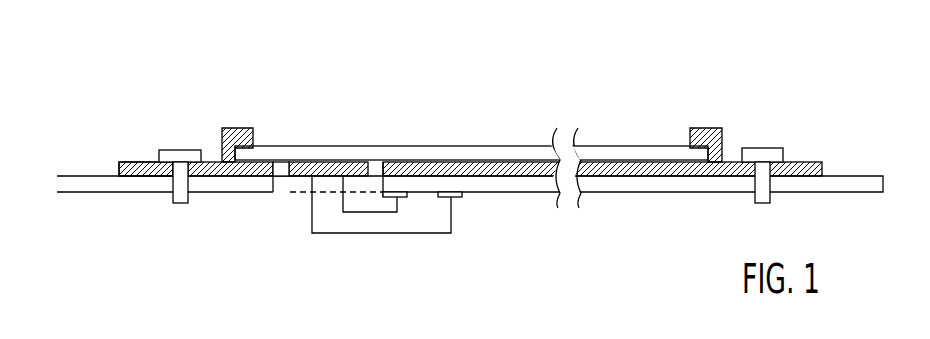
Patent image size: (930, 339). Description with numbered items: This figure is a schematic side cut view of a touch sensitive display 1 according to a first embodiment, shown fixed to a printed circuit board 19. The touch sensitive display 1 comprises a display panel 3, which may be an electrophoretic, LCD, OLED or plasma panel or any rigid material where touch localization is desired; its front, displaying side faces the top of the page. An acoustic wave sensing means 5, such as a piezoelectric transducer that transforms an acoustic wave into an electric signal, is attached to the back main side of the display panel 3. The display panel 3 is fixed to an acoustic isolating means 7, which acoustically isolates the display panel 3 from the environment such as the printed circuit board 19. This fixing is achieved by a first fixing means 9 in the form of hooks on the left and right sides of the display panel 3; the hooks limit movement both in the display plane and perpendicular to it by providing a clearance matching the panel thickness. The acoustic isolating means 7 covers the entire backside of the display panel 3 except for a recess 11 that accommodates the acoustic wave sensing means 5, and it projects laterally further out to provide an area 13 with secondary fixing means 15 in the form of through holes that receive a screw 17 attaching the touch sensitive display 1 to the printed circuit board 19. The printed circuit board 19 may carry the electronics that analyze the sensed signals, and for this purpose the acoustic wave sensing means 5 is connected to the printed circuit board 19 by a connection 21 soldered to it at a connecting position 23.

The touch sensitive display 1 is at (366, 70).
The display panel 3 is at (617, 140).
The acoustic wave sensing means 5 is at (290, 200).
The acoustic isolating means 7 is at (525, 177).
The first fixing means 9 is at (228, 120).
The recess 11 is at (273, 193).
The area 13 is at (133, 162).
The secondary fixing means 15 is at (170, 179).
The screw 17 is at (760, 156).
The printed circuit board 19 is at (57, 187).
The connection 21 is at (337, 234).
The connecting position 23 is at (462, 198).